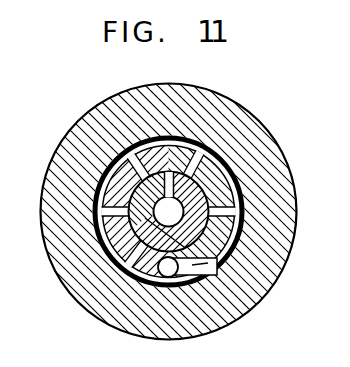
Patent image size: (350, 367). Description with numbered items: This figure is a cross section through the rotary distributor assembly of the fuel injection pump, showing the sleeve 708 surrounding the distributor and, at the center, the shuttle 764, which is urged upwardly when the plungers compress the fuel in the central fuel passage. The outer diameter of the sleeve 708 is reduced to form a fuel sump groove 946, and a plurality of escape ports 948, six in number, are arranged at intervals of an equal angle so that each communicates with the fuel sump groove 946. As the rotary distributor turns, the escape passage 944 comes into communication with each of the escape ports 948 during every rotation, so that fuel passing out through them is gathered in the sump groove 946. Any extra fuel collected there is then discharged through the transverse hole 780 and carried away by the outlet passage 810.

The escape passage 944 is at (166, 172).
The fuel sump groove 946 is at (220, 152).
The escape ports 948 is at (92, 165).
The sleeve 708 is at (238, 181).
The shuttle 764 is at (100, 253).
The transverse hole 780 is at (217, 272).
The outlet passage 810 is at (218, 333).